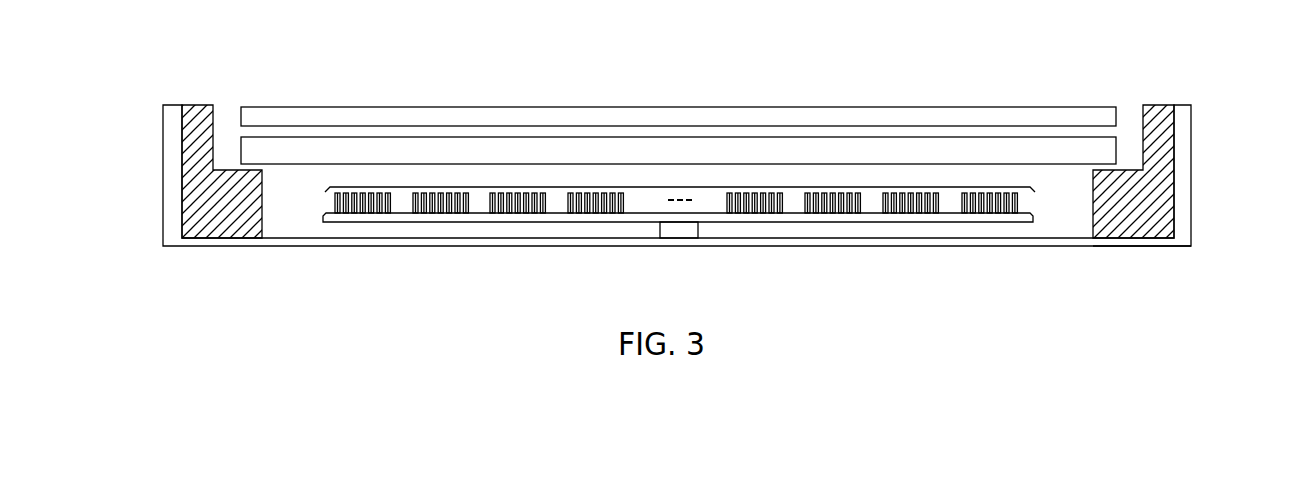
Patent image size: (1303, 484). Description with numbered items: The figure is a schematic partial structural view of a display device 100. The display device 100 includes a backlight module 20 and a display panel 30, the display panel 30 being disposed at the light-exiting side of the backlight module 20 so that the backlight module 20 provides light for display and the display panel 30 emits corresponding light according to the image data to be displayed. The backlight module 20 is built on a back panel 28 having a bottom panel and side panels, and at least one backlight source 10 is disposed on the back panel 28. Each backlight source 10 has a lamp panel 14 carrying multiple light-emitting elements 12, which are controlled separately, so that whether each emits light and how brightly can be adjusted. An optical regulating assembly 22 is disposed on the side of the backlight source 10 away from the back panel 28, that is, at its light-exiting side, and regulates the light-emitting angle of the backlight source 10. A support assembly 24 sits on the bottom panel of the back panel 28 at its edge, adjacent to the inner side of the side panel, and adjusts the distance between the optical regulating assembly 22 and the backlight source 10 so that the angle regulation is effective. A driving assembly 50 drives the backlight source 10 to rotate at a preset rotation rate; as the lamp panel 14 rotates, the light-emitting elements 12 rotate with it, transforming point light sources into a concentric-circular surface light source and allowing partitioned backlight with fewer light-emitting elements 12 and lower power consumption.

The display device 100 is at (727, 32).
The backlight module 20 is at (135, 207).
The support assembly 24 is at (1155, 180).
The back panel 28 is at (1117, 243).
The display panel 30 is at (957, 115).
The optical regulating assembly 22 is at (852, 160).
The backlight source 10 is at (460, 225).
The lamp panel 14 is at (922, 220).
The light-emitting element 12 is at (1002, 208).
The driving assembly 50 is at (681, 233).